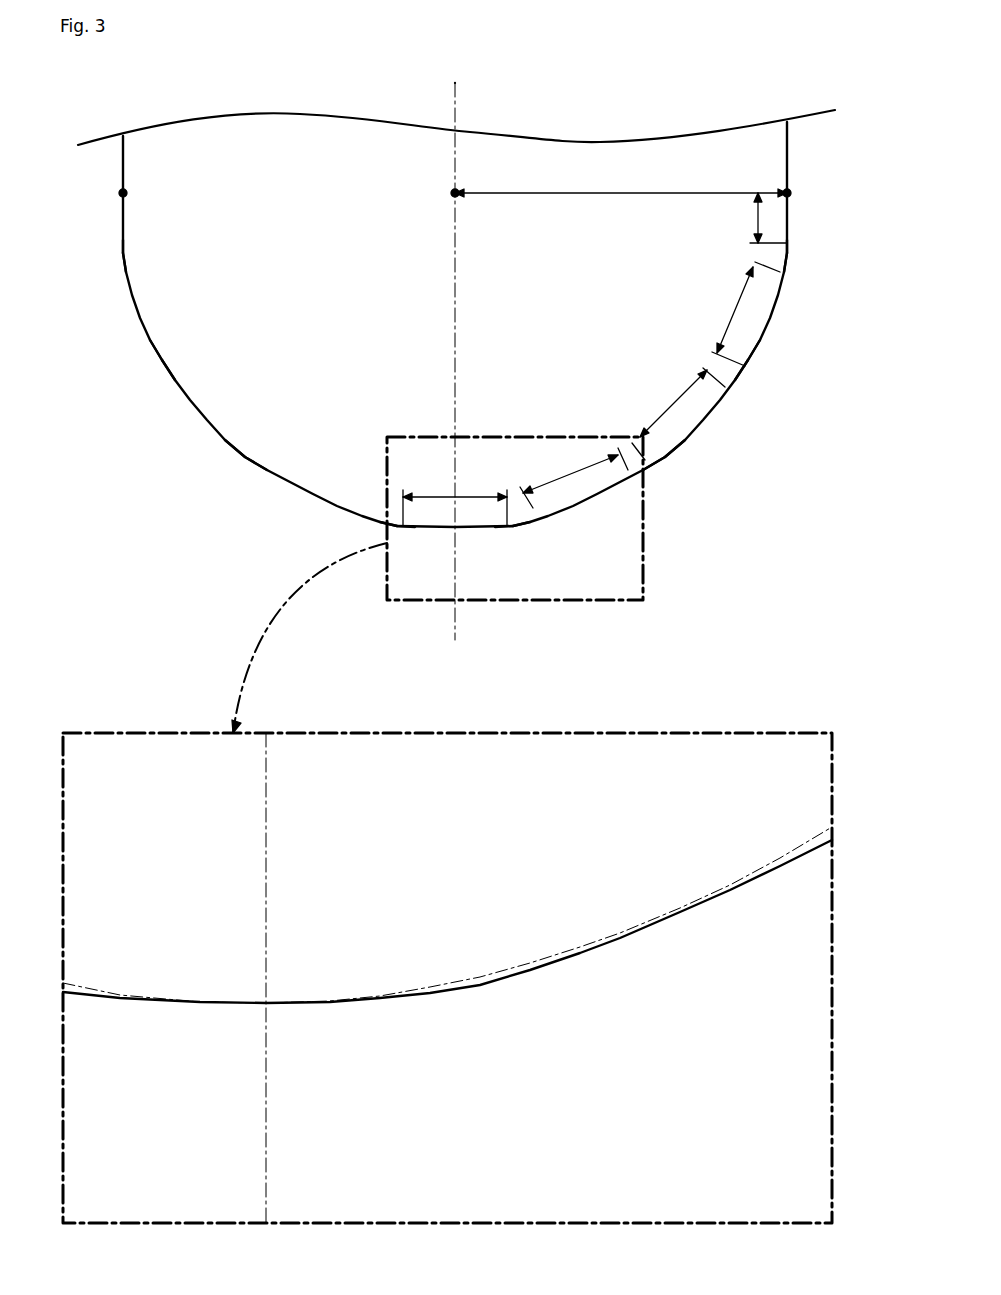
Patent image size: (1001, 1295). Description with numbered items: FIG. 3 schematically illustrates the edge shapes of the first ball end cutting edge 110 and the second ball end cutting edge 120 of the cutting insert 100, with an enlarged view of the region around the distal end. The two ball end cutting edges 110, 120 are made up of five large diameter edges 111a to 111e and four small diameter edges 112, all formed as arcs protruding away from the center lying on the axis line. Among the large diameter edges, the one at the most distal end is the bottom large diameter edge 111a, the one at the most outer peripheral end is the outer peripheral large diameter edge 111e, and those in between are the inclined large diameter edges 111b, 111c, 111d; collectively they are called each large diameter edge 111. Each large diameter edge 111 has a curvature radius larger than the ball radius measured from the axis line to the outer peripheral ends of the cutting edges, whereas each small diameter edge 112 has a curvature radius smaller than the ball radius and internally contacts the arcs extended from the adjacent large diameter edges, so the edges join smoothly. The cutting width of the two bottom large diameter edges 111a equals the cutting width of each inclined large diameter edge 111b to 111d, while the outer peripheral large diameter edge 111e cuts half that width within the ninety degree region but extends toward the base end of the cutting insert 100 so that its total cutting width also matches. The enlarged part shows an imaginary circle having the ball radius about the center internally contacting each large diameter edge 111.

The cutting insert 100 is at (768, 93).
The first ball end cutting edge 110 is at (783, 540).
The second ball end cutting edge 120 is at (135, 577).
The large diameter edge 111 is at (454, 562).
The bottom large diameter edge 111a is at (425, 530).
The inclined large diameter edge 111b is at (600, 500).
The inclined large diameter edge 111c is at (690, 430).
The inclined large diameter edge 111d is at (769, 302).
The outer peripheral large diameter edge 111e is at (790, 212).
The small diameter edge 112 is at (786, 256).